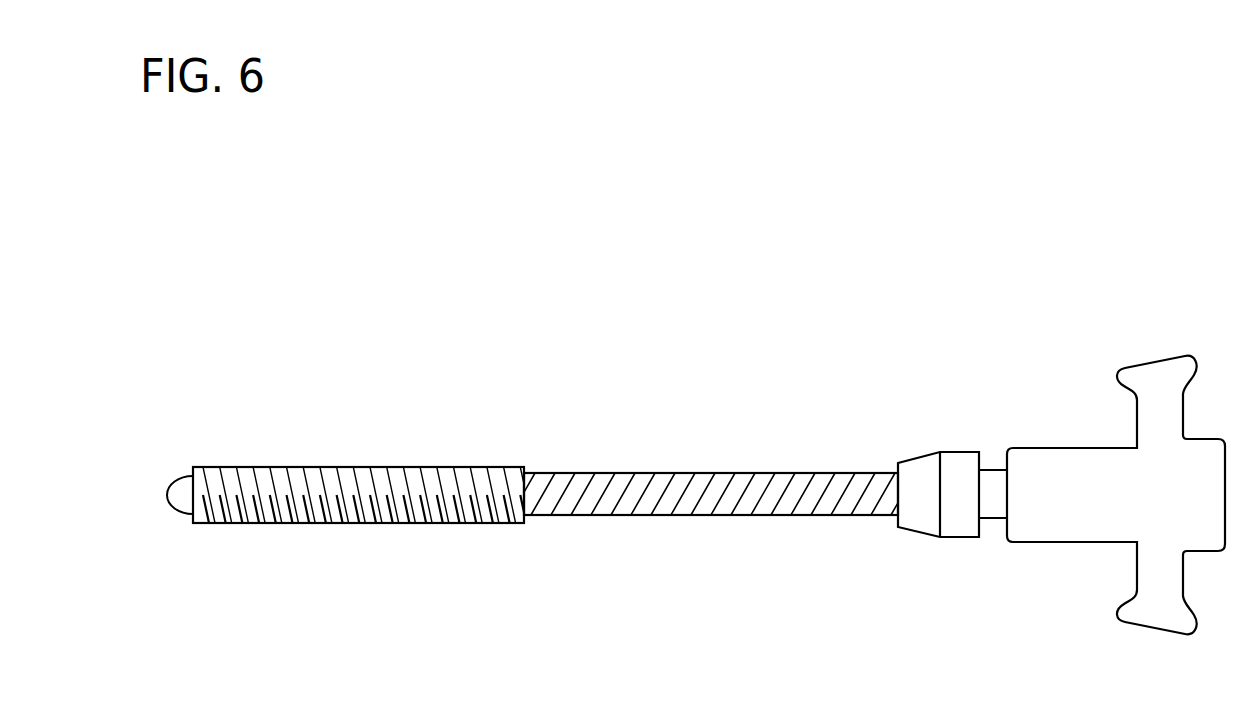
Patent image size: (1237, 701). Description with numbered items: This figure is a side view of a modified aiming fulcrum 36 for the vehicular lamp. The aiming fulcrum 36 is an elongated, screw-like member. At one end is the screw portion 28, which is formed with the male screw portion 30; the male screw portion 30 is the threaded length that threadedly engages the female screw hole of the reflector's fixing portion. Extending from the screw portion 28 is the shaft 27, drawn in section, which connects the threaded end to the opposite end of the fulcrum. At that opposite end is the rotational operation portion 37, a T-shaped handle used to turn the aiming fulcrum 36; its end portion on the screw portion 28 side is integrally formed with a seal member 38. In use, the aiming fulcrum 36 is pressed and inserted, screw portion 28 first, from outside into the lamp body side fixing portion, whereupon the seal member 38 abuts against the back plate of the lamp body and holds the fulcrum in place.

The aiming fulcrum 36 is at (863, 418).
The screw portion 28 is at (348, 484).
The male screw portion 30 is at (428, 523).
The shaft 27 is at (762, 511).
The seal member 38 is at (919, 520).
The rotational operation portion 37 is at (1069, 528).